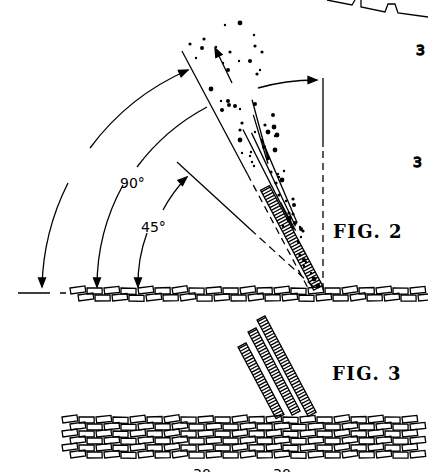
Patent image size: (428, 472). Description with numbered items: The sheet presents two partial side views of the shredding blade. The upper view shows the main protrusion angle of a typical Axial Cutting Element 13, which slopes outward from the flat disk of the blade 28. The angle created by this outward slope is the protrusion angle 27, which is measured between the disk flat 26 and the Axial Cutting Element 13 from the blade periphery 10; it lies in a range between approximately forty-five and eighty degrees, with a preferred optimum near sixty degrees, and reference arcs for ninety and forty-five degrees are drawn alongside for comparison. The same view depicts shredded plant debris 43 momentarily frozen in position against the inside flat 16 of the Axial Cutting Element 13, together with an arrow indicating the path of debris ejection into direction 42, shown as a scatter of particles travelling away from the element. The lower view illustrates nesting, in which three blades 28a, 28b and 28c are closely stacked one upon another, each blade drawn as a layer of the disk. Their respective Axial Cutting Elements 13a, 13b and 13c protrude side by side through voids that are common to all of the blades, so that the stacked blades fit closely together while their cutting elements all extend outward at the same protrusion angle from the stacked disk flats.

In FIG. 2, the blade periphery 10 is at (70, 292).
In FIG. 2, the Axial Cutting Element 13 is at (273, 217).
In FIG. 3, the Axial Cutting Element 13a is at (237, 342).
In FIG. 3, the Axial Cutting Element 13b is at (248, 333).
In FIG. 3, the Axial Cutting Element 13c is at (258, 320).
In FIG. 2, the inside flat 16 is at (293, 230).
In FIG. 2, the disk flat 26 is at (172, 287).
In FIG. 2, the protrusion angle 27 is at (114, 178).
In FIG. 2, the blade 28 is at (143, 299).
In FIG. 3, the blade 28a is at (62, 450).
In FIG. 3, the blade 28b is at (62, 435).
In FIG. 3, the blade 28c is at (62, 425).
In FIG. 2, the direction of debris ejection 42 is at (251, 156).
In FIG. 2, the shredded plant debris 43 is at (281, 193).